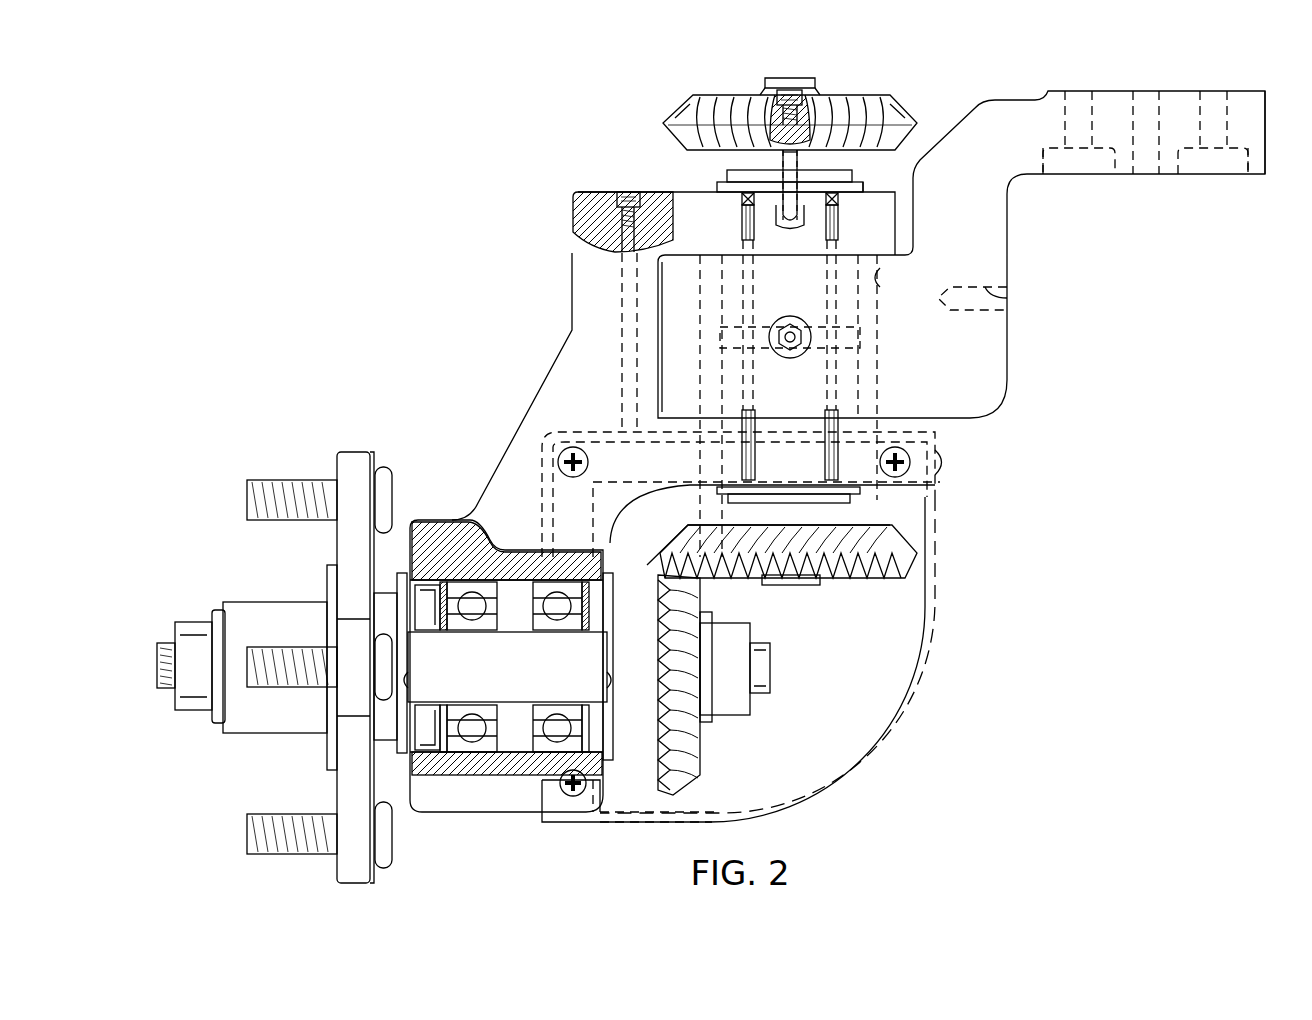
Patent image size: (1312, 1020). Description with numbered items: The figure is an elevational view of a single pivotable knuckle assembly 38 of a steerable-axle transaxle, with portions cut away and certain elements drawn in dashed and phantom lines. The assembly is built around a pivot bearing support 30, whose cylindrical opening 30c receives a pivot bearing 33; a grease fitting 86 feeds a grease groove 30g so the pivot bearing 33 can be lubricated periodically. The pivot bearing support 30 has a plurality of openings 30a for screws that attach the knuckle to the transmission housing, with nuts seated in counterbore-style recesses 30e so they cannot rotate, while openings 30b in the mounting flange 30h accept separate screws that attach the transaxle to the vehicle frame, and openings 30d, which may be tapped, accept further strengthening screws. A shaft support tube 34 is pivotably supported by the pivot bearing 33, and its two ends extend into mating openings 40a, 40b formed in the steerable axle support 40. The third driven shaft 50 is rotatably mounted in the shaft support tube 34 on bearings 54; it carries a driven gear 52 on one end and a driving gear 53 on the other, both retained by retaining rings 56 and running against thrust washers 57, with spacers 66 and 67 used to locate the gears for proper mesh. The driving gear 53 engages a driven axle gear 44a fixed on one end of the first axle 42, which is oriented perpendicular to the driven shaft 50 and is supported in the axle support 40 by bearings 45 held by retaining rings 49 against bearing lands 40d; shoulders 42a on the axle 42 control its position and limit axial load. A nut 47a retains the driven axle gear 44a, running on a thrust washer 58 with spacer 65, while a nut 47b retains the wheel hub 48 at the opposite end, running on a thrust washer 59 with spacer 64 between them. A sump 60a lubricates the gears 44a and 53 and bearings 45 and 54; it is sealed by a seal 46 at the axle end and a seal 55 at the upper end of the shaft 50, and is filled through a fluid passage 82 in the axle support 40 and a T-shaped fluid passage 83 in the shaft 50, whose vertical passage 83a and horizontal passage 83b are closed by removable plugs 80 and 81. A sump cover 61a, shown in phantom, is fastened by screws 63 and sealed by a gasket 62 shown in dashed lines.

The first pivot bearing support 30 is at (961, 254).
The openings 30a is at (1066, 118).
The openings 30b is at (1135, 143).
The cylindrical opening 30c is at (882, 276).
The openings 30d is at (1007, 298).
The recesses 30e is at (1046, 160).
The grease groove 30g is at (818, 337).
The mounting flange 30h is at (1258, 90).
The pivot bearing 33 is at (878, 318).
The shaft support tube 34 is at (860, 398).
The first pivotable knuckle assembly 38 is at (270, 144).
The first steerable axle support 40 is at (523, 386).
The mating opening 40a is at (882, 243).
The mating opening 40b is at (862, 470).
The bearing lands 40d is at (530, 548).
The first axle 42 is at (150, 690).
The shoulders 42a is at (410, 680).
The driven axle gear 44a is at (700, 782).
The bearings 45 is at (555, 730).
The seal 46 is at (428, 750).
The nut 47a is at (738, 715).
The nut 47b is at (212, 712).
The wheel hub 48 is at (280, 600).
The retaining rings 49 is at (444, 585).
The third driven shaft 50 is at (808, 93).
The driven gear 52 is at (690, 140).
The driving gear 53 is at (900, 560).
The bearings 54 is at (742, 230).
The seal 55 is at (742, 200).
The retaining rings 56 is at (815, 90).
The thrust washers 57 is at (727, 186).
The thrust washer 58 is at (600, 775).
The thrust washer 59 is at (402, 762).
The sump 60a is at (762, 659).
The sump cover 61a is at (900, 700).
The gasket 62 is at (542, 490).
The screws 63 is at (560, 452).
The spacer 64 is at (385, 560).
The spacer 65 is at (614, 740).
The spacer 66 is at (730, 498).
The spacer 67 is at (866, 190).
The removable plug 80 is at (628, 192).
The removable plug 81 is at (785, 90).
The fluid passage 82 is at (620, 305).
The T-shaped fluid passage 83 is at (786, 210).
The vertical passage 83a is at (800, 160).
The horizontal passage 83b is at (780, 230).
The grease fitting 86 is at (791, 352).